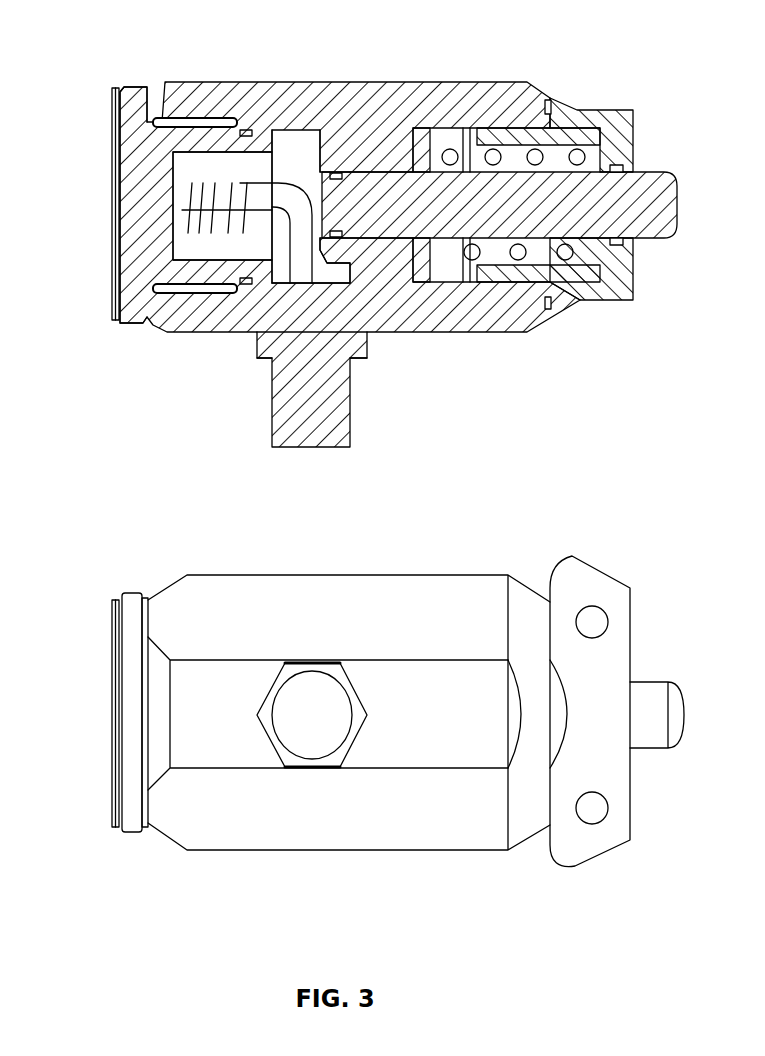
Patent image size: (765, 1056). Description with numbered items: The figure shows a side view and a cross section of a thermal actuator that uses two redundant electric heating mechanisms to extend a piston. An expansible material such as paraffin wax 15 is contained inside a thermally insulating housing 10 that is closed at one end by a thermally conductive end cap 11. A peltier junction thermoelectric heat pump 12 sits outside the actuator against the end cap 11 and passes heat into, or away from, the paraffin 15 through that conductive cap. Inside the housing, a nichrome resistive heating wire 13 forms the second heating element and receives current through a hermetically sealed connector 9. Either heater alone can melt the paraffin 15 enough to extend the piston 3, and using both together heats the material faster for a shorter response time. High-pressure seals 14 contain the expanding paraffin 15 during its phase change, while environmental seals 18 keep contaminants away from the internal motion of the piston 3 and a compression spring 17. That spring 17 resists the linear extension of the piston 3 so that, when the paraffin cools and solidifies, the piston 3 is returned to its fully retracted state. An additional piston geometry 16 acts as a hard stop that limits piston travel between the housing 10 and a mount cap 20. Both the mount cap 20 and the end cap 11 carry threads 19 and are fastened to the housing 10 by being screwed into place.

The piston 3 is at (655, 680).
The hermetically sealed connector 9 is at (289, 661).
The thermally insulating housing 10 is at (433, 627).
The thermally conductive end cap 11 is at (127, 595).
The peltier junction thermoelectric heat pump 12 is at (112, 626).
The nichrome resistive heating wire 13 is at (219, 178).
The high-pressure seals 14 is at (289, 163).
The expansible material (paraffin wax) 15 is at (346, 168).
The additional piston geometry 16 is at (411, 147).
The compression spring 17 is at (527, 145).
The environmental seals 18 is at (553, 97).
The threads 19 is at (193, 297).
The mount cap 20 is at (599, 303).